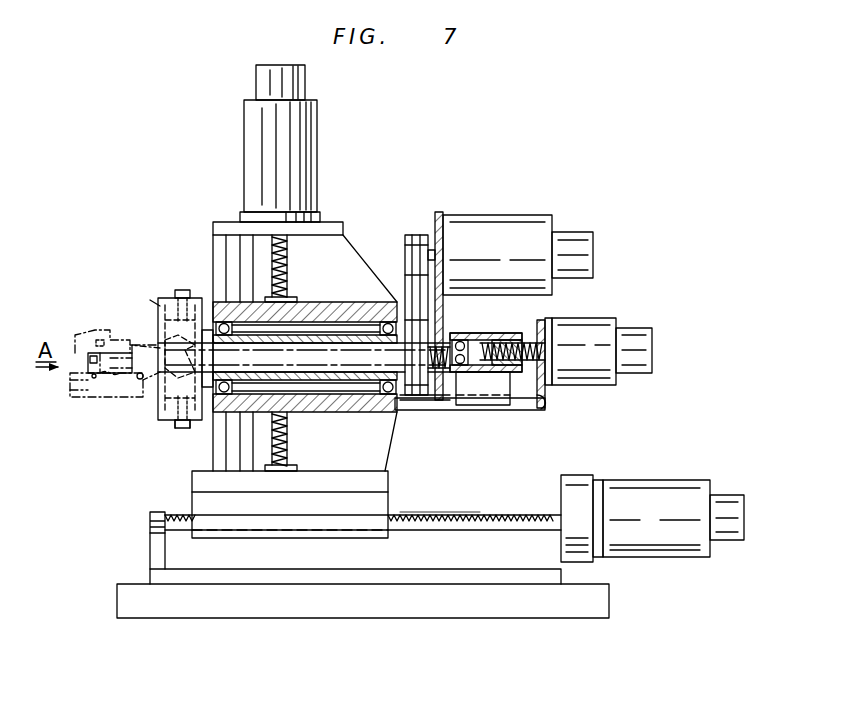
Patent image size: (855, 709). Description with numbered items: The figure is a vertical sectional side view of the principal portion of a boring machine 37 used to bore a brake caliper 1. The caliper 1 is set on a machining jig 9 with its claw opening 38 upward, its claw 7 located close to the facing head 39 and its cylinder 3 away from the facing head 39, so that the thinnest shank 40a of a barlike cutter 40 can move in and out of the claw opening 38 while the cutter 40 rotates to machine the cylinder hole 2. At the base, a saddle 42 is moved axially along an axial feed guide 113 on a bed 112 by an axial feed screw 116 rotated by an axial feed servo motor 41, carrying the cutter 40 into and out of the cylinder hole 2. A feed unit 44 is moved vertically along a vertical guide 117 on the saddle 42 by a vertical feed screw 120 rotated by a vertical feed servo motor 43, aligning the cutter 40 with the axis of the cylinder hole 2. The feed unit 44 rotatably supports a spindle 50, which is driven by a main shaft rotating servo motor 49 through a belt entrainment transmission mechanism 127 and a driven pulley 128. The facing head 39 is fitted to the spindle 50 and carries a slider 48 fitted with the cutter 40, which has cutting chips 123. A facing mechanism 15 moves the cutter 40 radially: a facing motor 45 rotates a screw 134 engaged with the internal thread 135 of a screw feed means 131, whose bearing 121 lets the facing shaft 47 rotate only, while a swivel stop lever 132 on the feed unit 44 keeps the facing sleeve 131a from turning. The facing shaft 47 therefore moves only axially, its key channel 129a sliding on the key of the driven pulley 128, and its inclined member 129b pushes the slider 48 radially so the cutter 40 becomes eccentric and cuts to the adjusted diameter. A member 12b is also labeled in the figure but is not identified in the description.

The caliper 1 is at (101, 330).
The cylinder hole 2 is at (80, 342).
The cylinder 3 is at (80, 397).
The claw 7 is at (140, 350).
The machining jig 9 is at (64, 390).
The plate 12b is at (211, 302).
The facing mechanism 15 is at (168, 382).
The boring machine 37 is at (212, 252).
The claw opening 38 is at (142, 378).
The facing head 39 is at (196, 425).
The cutter 40 is at (118, 353).
The thinnest shank 40a is at (118, 374).
The axial feed servo motor 41 is at (626, 482).
The saddle 42 is at (388, 498).
The vertical feed servo motor 43 is at (320, 202).
The feed unit 44 is at (387, 302).
The facing motor 45 is at (588, 386).
The facing shaft 47 is at (323, 372).
The slider 48 is at (170, 423).
The main shaft rotating servo motor 49 is at (500, 218).
The spindle 50 is at (346, 380).
The bed 112 is at (610, 584).
The axial feed guide 113 is at (509, 522).
The axial feed screw 116 is at (468, 516).
The vertical guide 117 is at (226, 260).
The vertical feed screw 120 is at (281, 272).
The bearing 121 is at (465, 328).
The chips 123 is at (94, 378).
The belt entrainment transmission mechanism 127 is at (406, 320).
The driven pulley 128 is at (440, 410).
The key channel 129a is at (403, 400).
The inclined member 129b is at (160, 306).
The screw feed means 131 is at (500, 328).
The facing sleeve 131a is at (518, 336).
The swivel stop lever 132 is at (502, 410).
The screw 134 is at (552, 402).
The internal thread 135 is at (546, 350).